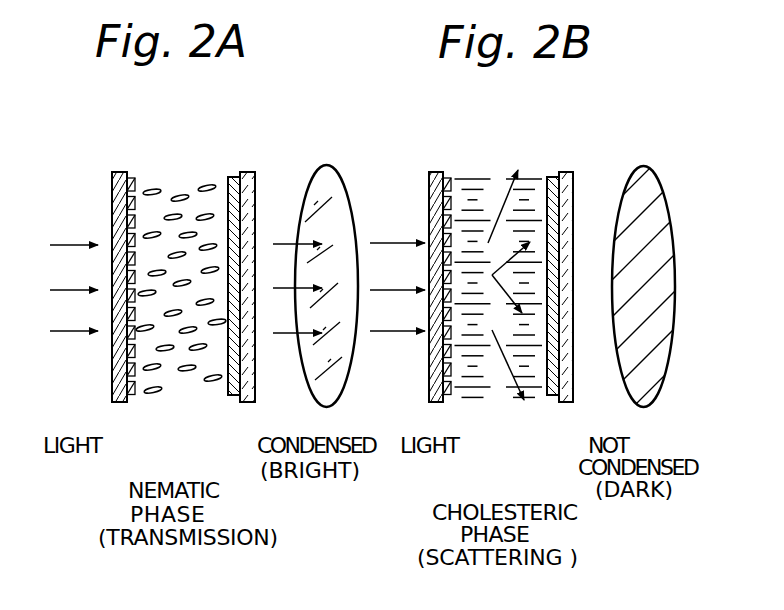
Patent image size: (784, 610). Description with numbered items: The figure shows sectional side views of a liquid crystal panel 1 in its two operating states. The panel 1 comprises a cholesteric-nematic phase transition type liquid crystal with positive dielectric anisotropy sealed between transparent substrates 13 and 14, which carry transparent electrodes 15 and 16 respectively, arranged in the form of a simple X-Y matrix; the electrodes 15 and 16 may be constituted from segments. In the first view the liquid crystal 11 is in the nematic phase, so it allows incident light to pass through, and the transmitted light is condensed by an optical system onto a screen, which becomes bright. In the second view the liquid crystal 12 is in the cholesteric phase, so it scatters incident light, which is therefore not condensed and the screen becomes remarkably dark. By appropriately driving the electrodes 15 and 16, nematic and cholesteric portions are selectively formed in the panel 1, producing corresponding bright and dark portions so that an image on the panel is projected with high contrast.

In FIG. 2A, the liquid crystal panel 1 is at (266, 173).
In FIG. 2B, the liquid crystal panel 1 is at (587, 174).
In FIG. 2A, the liquid crystal in nematic phase 11 is at (180, 190).
In FIG. 2B, the liquid crystal in cholesteric phase 12 is at (487, 180).
In FIG. 2A, the transparent substrate 13 is at (113, 173).
In FIG. 2B, the transparent substrate 13 is at (432, 172).
In FIG. 2A, the transparent substrate 14 is at (247, 172).
In FIG. 2B, the transparent substrate 14 is at (568, 172).
In FIG. 2A, the transparent electrode 15 is at (131, 178).
In FIG. 2B, the transparent electrode 15 is at (449, 178).
In FIG. 2A, the transparent electrode 16 is at (234, 177).
In FIG. 2B, the transparent electrode 16 is at (553, 177).